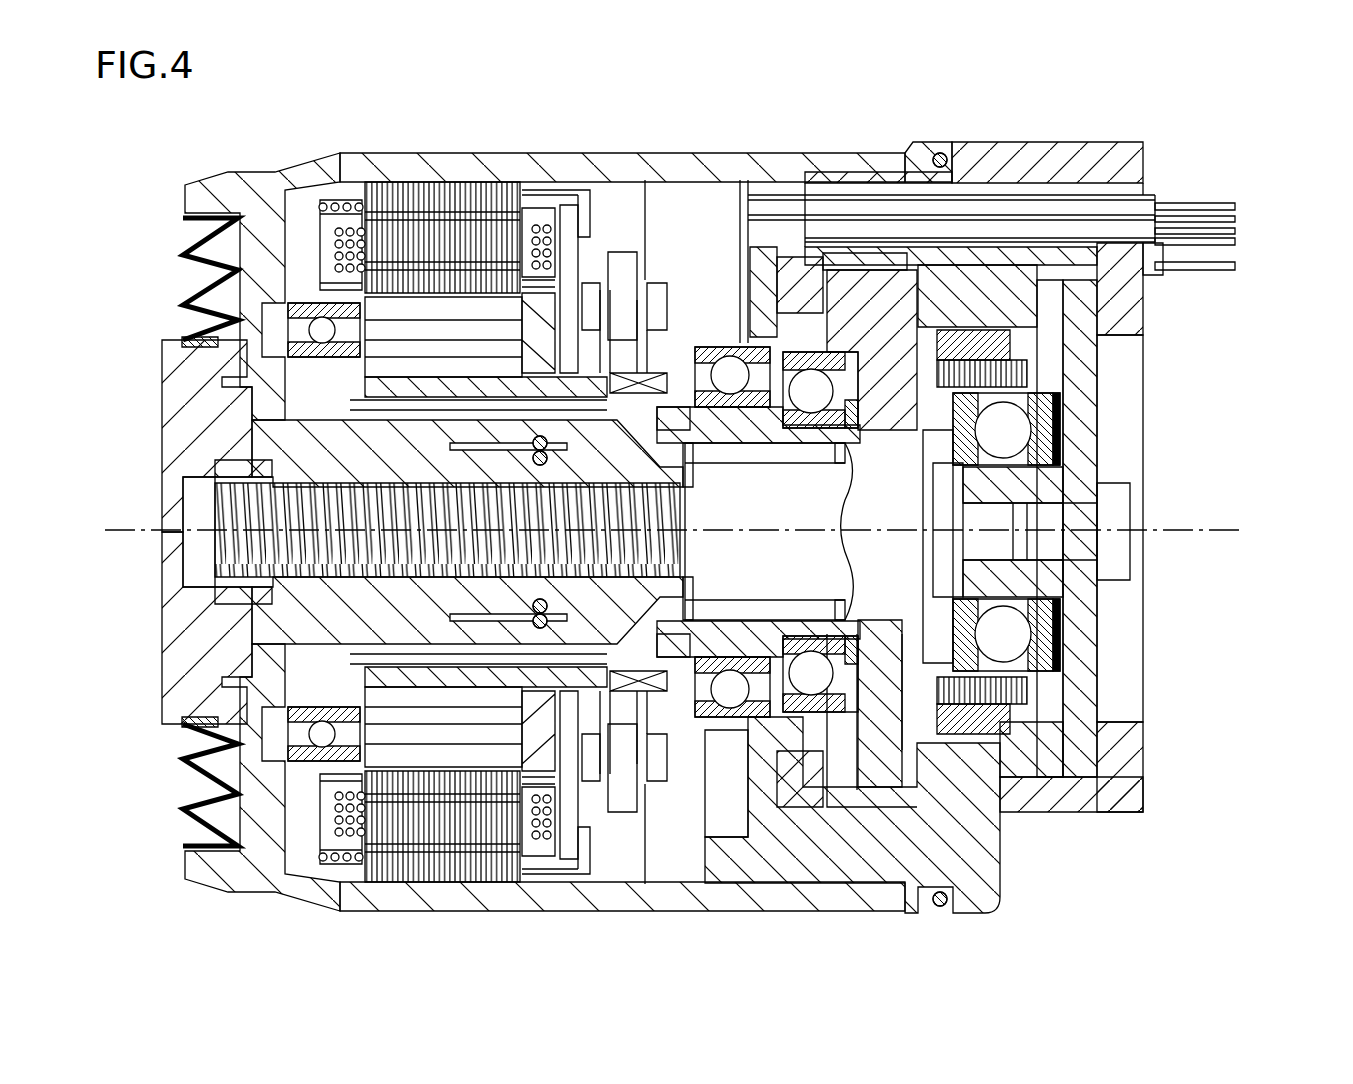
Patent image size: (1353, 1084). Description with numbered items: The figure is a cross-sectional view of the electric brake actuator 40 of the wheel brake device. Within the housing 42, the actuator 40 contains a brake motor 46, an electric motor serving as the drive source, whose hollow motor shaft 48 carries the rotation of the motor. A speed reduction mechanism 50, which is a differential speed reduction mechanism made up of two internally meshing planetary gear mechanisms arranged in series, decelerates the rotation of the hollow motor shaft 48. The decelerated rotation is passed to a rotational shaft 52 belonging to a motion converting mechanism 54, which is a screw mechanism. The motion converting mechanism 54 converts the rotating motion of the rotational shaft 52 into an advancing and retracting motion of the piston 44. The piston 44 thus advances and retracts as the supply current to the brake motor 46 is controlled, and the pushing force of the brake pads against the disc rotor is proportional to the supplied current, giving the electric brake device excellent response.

The actuator 40 is at (775, 90).
The housing 42 is at (578, 160).
The piston 44 is at (172, 602).
The brake motor 46 is at (441, 178).
The hollow motor shaft 48 is at (686, 428).
The speed reduction mechanism 50 is at (845, 236).
The rotational shaft 52 is at (708, 575).
The motion converting mechanism 54 is at (641, 622).